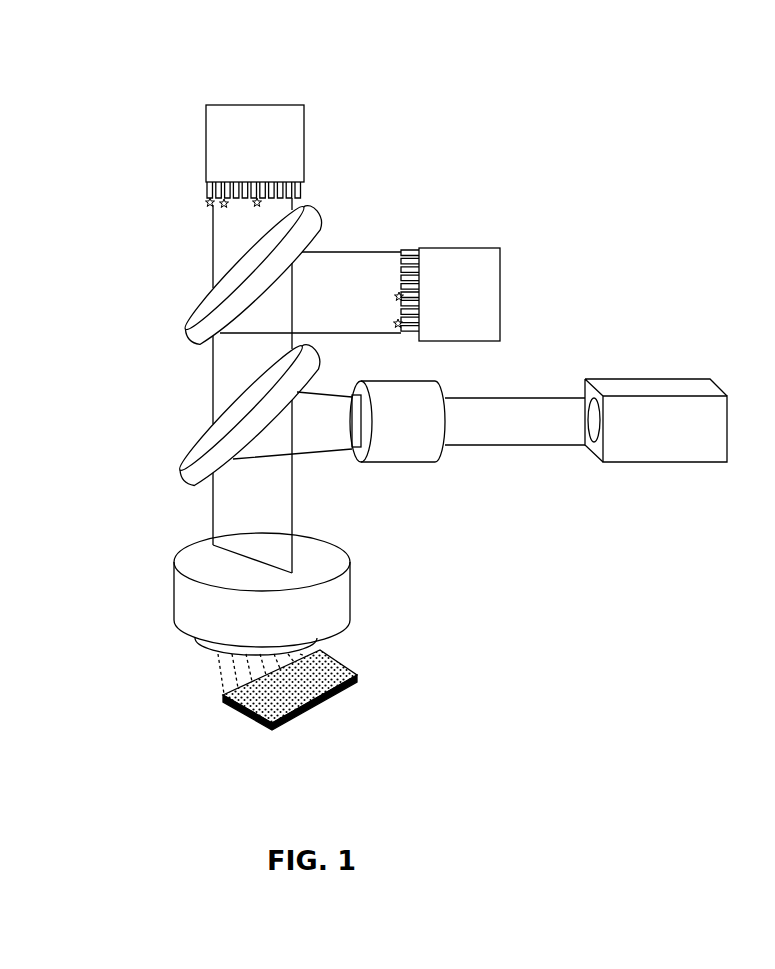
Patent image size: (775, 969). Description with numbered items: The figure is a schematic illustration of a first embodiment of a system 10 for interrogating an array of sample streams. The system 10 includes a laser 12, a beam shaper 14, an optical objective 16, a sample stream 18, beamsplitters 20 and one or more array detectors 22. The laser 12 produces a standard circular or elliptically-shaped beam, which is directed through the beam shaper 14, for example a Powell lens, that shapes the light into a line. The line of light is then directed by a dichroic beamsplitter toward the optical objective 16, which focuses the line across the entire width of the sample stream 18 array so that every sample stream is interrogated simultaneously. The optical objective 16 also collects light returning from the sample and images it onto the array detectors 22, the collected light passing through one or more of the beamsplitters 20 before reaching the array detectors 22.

The system 10 is at (622, 157).
The laser 12 is at (677, 373).
The beam shaper 14 is at (402, 419).
The optical objective 16 is at (313, 612).
The sample stream 18 is at (321, 704).
The beamsplitters 20 is at (202, 310).
The array detectors 22 is at (262, 143).